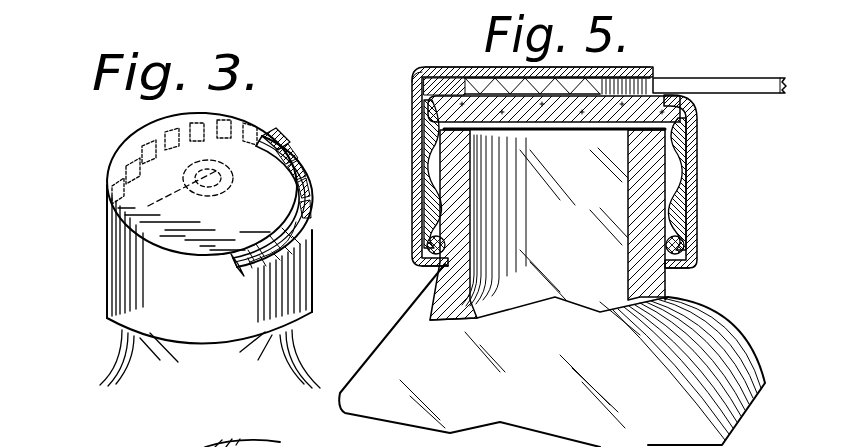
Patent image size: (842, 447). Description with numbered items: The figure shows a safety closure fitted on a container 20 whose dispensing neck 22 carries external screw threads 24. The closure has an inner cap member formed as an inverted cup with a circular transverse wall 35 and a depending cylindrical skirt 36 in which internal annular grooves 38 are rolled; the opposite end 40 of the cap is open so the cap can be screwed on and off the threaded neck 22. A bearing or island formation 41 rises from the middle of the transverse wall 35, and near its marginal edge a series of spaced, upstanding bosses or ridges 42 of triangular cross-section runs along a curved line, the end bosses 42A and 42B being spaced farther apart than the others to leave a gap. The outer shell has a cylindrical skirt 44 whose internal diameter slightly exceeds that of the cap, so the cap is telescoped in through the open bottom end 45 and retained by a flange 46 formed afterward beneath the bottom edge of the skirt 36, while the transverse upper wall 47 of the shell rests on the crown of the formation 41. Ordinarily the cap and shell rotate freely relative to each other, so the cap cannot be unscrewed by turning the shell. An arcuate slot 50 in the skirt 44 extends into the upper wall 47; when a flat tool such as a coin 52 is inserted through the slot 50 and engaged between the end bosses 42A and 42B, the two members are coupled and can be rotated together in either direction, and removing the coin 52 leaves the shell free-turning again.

In FIG. 3, the container 20 is at (113, 406).
In FIG. 3, the dispensing neck 22 is at (148, 347).
In FIG. 5, the dispensing neck 22 is at (662, 290).
In FIG. 5, the external screw threads 24 is at (450, 197).
In FIG. 5, the circular transverse wall 35 is at (632, 74).
In FIG. 5, the annular depending cylindrical wall or skirt 36 is at (432, 198).
In FIG. 5, the internal annular grooves 38 is at (690, 205).
In FIG. 5, the open end of cap member 40 is at (430, 264).
In FIG. 3, the bearing or island formation 41 is at (108, 205).
In FIG. 5, the bearing or island formation 41 is at (526, 67).
In FIG. 3, the bosses or ridges 42 is at (205, 120).
In FIG. 5, the bosses or ridges 42 is at (412, 82).
In FIG. 3, the end boss 42A is at (108, 182).
In FIG. 3, the end boss 42B is at (272, 240).
In FIG. 3, the cylindrical skirt of shell 44 is at (108, 248).
In FIG. 5, the cylindrical skirt of shell 44 is at (413, 165).
In FIG. 5, the open bottom end of shell 45 is at (428, 300).
In FIG. 5, the flange 46 is at (670, 268).
In FIG. 3, the transverse upper wall of shell 47 is at (352, 446).
In FIG. 5, the transverse upper wall of shell 47 is at (652, 67).
In FIG. 3, the arcuate slot 50 is at (240, 280).
In FIG. 5, the arcuate slot 50 is at (658, 82).
In FIG. 5, the coin 52 is at (748, 94).